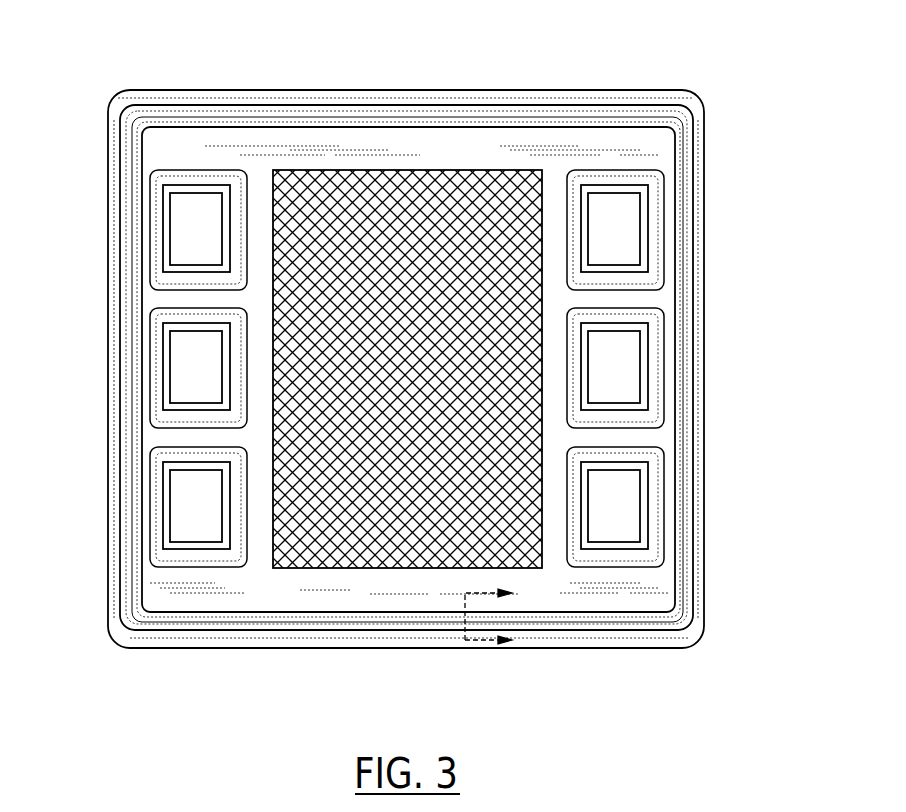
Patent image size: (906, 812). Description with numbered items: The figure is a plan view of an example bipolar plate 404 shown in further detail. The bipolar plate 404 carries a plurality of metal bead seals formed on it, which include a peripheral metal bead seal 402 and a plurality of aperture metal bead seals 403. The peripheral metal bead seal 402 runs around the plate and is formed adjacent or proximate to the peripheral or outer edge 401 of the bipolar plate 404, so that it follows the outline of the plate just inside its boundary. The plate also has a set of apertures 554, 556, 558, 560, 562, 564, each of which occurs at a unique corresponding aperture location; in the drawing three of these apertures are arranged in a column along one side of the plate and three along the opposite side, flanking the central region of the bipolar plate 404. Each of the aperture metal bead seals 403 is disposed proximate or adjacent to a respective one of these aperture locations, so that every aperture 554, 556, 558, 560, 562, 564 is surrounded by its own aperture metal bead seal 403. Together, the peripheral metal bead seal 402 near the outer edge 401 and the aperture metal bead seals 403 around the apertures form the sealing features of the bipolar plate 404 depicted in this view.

The outer edge 401 is at (237, 648).
The peripheral metal bead seal 402 is at (682, 120).
The aperture metal bead seals 403 is at (153, 263).
The bipolar plate 404 is at (630, 78).
The aperture 554 is at (185, 225).
The aperture 556 is at (618, 498).
The aperture 558 is at (620, 358).
The aperture 560 is at (185, 360).
The aperture 562 is at (620, 228).
The aperture 564 is at (185, 493).